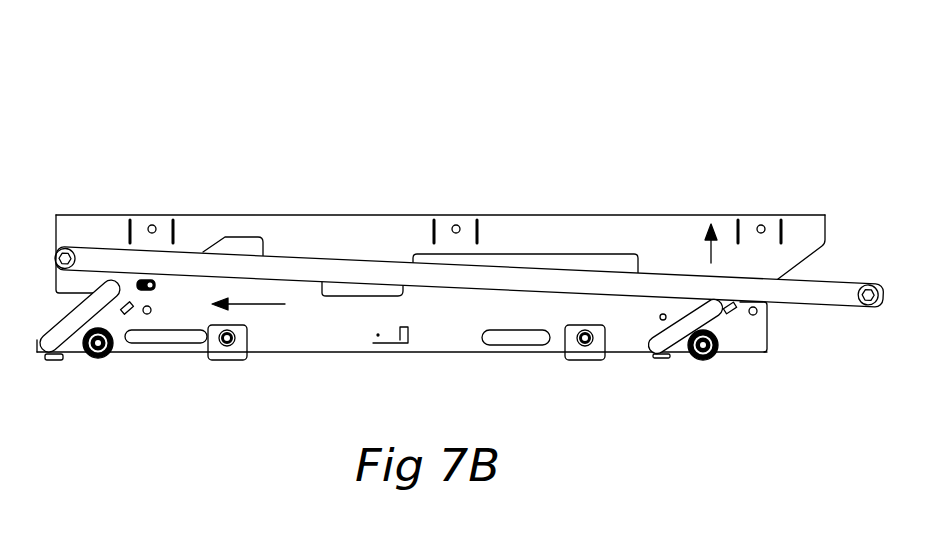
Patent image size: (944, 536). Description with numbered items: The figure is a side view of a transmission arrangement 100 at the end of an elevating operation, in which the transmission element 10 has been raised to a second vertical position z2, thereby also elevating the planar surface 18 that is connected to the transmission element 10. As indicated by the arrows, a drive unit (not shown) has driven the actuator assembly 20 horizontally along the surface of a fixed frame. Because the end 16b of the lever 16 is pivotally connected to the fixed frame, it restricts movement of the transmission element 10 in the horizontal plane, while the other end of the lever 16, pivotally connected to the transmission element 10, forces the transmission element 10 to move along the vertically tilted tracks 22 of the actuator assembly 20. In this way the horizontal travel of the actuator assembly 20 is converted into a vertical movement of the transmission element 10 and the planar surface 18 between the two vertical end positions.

The transmission arrangement 100 is at (573, 168).
The second vertical position z2 is at (70, 215).
The transmission element 10 is at (212, 215).
The planar surface 18 is at (443, 215).
The lever 16 is at (522, 283).
The end of the lever 16b is at (877, 285).
The actuator assembly 20 is at (37, 357).
The vertically tilted tracks 22 is at (712, 313).